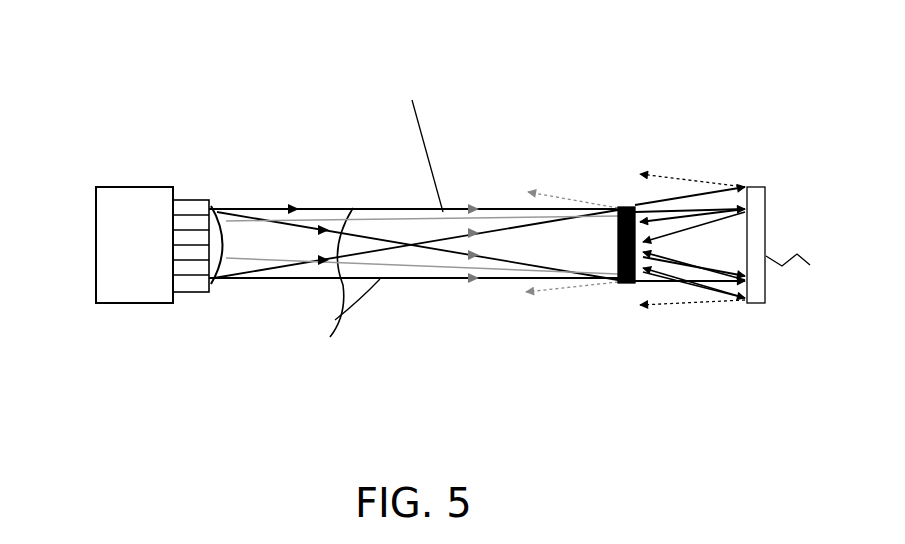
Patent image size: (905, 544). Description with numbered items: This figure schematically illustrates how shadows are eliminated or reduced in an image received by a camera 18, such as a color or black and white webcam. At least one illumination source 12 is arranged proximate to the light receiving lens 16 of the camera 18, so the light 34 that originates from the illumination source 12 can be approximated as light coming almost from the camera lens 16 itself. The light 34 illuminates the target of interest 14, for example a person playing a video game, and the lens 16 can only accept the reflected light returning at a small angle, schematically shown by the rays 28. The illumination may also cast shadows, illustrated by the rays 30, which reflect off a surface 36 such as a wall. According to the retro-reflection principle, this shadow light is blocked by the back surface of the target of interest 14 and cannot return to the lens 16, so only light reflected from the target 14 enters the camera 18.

The illumination source 12 is at (190, 203).
The target of interest 14 is at (607, 285).
The light receiving lens 16 is at (220, 210).
The camera 18 is at (140, 305).
The rays 28 is at (405, 222).
The rays 30 is at (670, 180).
The light 34 is at (345, 290).
The surface 36 is at (805, 245).